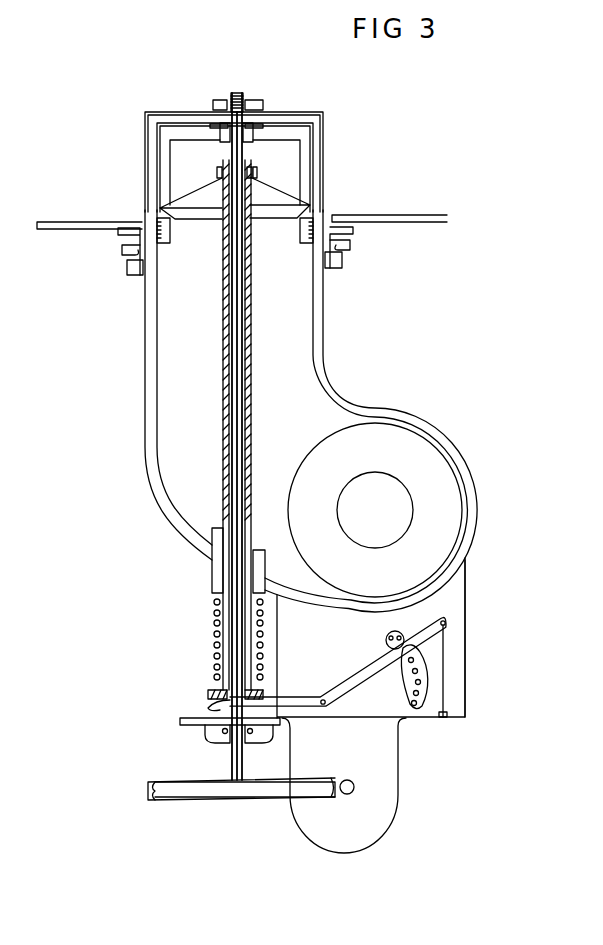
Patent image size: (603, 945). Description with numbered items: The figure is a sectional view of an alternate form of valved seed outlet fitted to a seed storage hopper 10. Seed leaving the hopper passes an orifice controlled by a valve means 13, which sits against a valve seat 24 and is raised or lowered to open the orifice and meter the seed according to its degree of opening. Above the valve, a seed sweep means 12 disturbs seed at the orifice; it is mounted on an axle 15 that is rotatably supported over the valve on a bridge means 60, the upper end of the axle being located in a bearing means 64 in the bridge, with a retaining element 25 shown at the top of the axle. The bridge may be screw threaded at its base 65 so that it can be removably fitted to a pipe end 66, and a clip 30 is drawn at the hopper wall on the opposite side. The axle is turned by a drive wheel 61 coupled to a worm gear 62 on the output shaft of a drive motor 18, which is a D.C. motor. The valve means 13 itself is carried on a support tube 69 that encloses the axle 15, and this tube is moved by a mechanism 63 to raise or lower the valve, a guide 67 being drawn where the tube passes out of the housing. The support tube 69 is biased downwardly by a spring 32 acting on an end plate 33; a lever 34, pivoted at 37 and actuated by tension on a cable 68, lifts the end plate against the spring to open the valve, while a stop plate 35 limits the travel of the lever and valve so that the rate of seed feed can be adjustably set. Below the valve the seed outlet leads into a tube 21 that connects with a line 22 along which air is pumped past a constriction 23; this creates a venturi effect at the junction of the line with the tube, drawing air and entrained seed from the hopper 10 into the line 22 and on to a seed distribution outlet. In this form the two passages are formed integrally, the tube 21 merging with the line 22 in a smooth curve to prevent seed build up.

The seed storage hopper 10 is at (394, 214).
The seed sweep means 12 is at (322, 132).
The valve means 13 is at (279, 198).
The axle 15 is at (230, 160).
The drive motor 18 is at (395, 765).
The tube 21 is at (290, 451).
The line 22 is at (385, 526).
The constriction 23 is at (407, 459).
The valve seat 24 is at (302, 222).
The shaft end nut 25 is at (230, 78).
The right clip 30 is at (364, 247).
The spring 32 is at (210, 634).
The end plate 33 is at (208, 694).
The lever 34 is at (300, 699).
The stop plate 35 is at (385, 638).
The pivot 37 is at (333, 710).
The bridge means 60 is at (278, 134).
The drive wheel 61 is at (150, 791).
The worm gear 62 is at (356, 787).
The mechanism 63 is at (483, 631).
The bearing means 64 is at (222, 128).
The base 65 is at (172, 240).
The pipe end 66 is at (140, 225).
The clamp 67 is at (212, 563).
The cable 68 is at (465, 684).
The support tube 69 is at (252, 352).